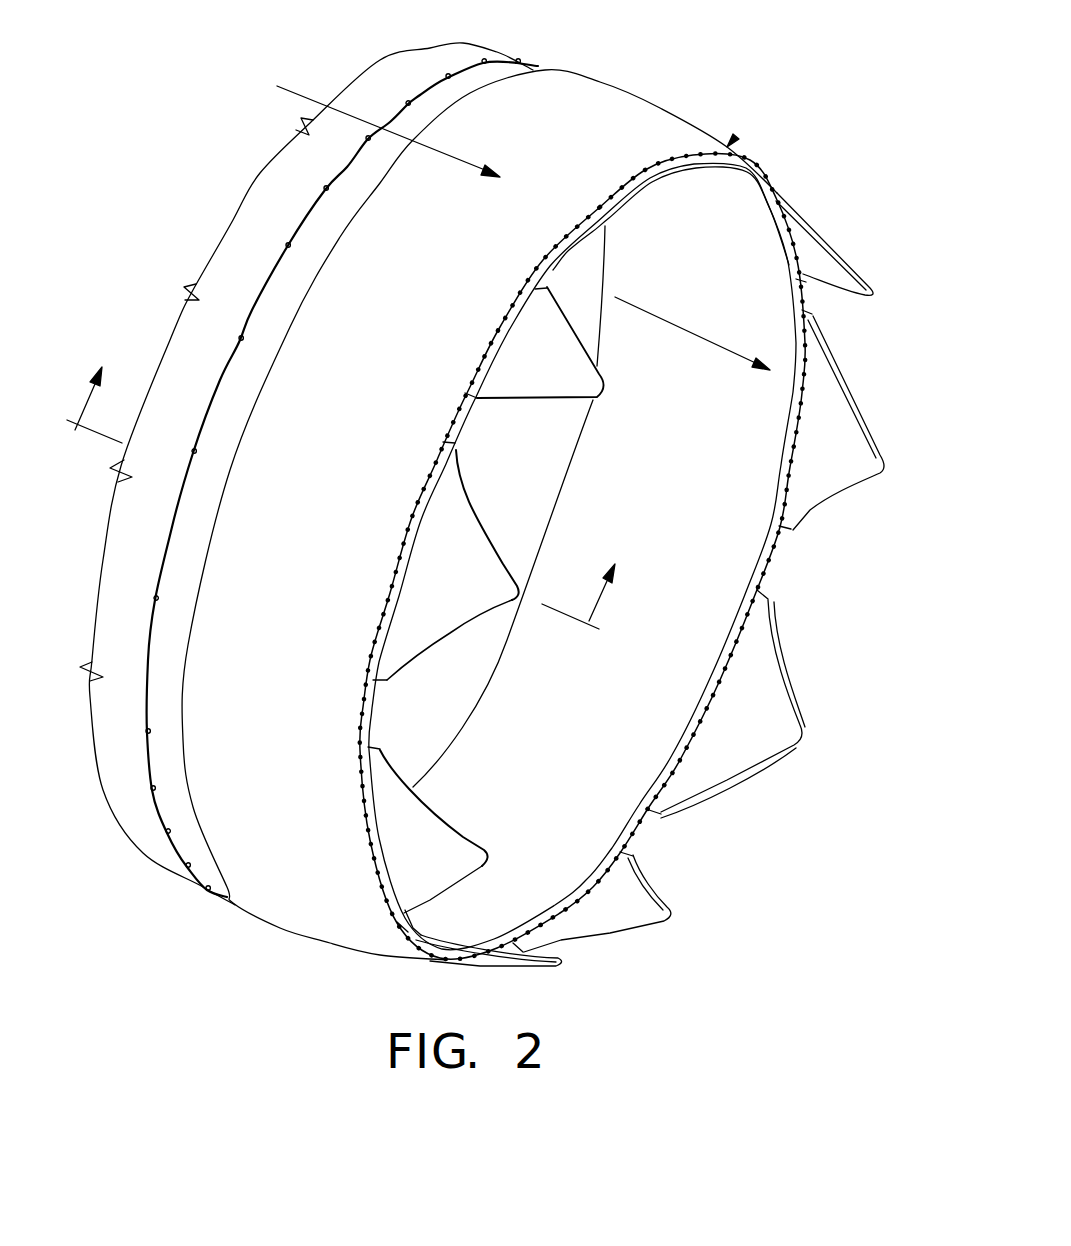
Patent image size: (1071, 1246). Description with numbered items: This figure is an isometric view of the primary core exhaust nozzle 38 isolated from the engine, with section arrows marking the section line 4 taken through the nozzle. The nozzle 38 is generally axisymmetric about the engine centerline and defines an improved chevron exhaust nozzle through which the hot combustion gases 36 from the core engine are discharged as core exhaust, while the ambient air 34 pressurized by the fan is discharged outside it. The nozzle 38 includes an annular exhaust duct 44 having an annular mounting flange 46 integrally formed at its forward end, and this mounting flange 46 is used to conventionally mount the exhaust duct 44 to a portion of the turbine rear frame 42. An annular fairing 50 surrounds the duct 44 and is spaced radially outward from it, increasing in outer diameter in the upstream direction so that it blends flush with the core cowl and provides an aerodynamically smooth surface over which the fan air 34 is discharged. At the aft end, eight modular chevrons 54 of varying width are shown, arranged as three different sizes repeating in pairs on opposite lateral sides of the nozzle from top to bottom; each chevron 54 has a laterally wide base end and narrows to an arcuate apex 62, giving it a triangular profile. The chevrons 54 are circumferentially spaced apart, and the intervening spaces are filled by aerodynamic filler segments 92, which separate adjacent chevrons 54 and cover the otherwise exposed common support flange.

The ambient air 34 is at (452, 148).
The hot combustion gases 36 is at (677, 320).
The core exhaust nozzle 38 is at (732, 142).
The turbine rear frame 42 is at (267, 173).
The annular exhaust duct 44 is at (589, 764).
The annular mounting flange 46 is at (287, 248).
The annular fairing 50 is at (328, 520).
The modular chevrons 54 is at (463, 579).
The arcuate apex 62 is at (883, 461).
The aerodynamic filler segments 92 is at (638, 197).
The section line 4- 4 is at (346, 479).